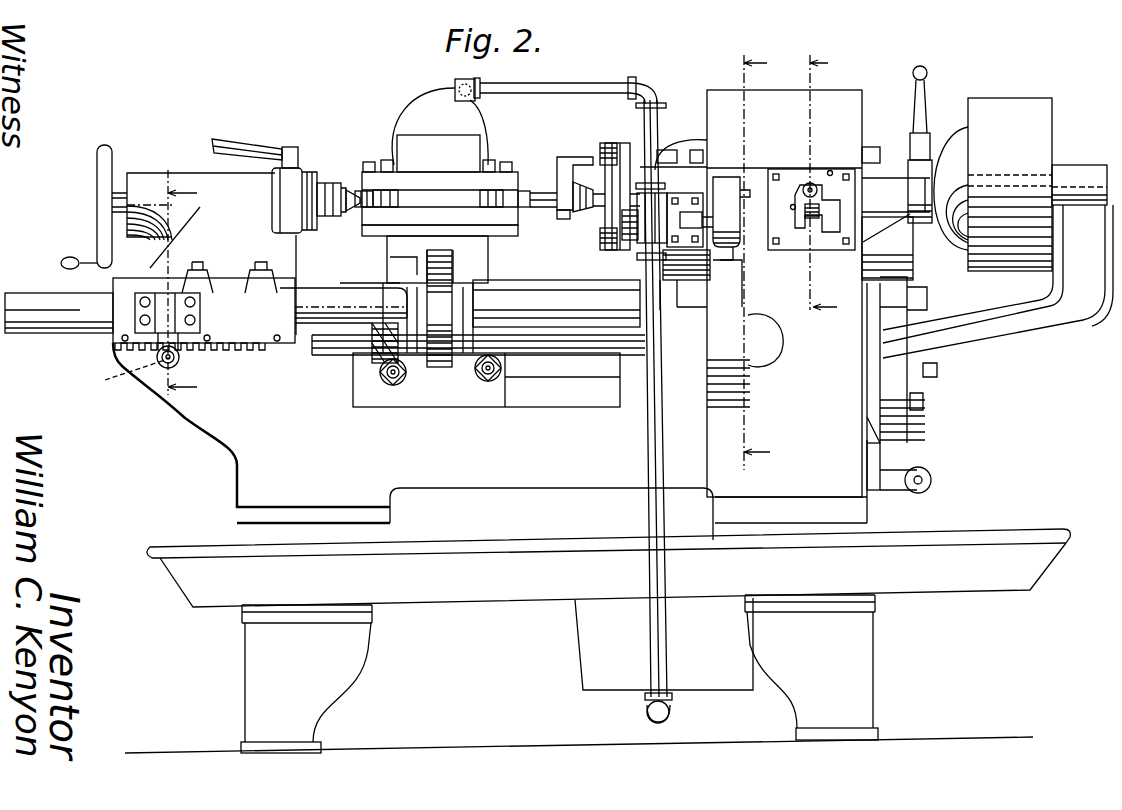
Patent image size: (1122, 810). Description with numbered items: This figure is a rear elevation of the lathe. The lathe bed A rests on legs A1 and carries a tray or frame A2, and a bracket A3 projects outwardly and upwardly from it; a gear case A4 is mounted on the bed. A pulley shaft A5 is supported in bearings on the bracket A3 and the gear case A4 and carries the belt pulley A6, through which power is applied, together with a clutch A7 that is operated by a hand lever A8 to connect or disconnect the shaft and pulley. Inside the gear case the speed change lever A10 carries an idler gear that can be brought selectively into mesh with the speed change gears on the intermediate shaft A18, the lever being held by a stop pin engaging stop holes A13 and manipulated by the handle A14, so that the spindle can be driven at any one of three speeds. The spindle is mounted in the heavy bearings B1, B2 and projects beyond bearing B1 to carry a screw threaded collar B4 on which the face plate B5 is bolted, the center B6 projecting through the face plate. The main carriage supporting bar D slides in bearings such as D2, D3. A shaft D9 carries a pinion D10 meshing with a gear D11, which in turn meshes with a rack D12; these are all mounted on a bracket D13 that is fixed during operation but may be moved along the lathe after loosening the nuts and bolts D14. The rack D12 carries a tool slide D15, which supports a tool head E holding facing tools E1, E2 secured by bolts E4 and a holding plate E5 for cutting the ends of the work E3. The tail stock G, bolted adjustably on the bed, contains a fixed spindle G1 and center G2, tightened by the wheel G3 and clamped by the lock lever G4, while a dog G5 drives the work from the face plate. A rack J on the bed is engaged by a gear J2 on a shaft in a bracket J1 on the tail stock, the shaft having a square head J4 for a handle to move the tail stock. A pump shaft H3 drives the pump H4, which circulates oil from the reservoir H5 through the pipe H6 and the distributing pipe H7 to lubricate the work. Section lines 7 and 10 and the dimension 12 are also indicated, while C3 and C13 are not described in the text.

The lathe bed A is at (200, 407).
The legs A1 is at (337, 673).
The tray or frame A2 is at (197, 547).
The bracket A3 is at (1073, 320).
The gear case A4 is at (777, 97).
The pulley shaft A5 is at (1113, 187).
The belt pulley A6 is at (1010, 107).
The clutch A7 is at (955, 140).
The hand lever A8 is at (917, 87).
The speed change lever A10 is at (803, 212).
The stop holes A13 is at (793, 205).
The handle A14 is at (810, 187).
The intermediate shaft A18 is at (915, 247).
The bearing B1 is at (683, 140).
The bearing B2 is at (893, 160).
The collar B4 is at (620, 142).
The face plate B5 is at (603, 140).
The center B6 is at (582, 205).
The bracket C3 is at (903, 297).
The roller C13 is at (932, 480).
The main carriage supporting bar D is at (72, 303).
The bearing D2 is at (633, 283).
The bearing D3 is at (113, 282).
The shaft D9 is at (330, 340).
The pinion D10 is at (446, 345).
The gear D11 is at (437, 285).
The rack D12 is at (463, 257).
The bracket D13 is at (487, 400).
The nuts and bolts D14 is at (393, 385).
The tool slide D15 is at (397, 238).
The tool head E is at (447, 213).
The facing tool E1 is at (390, 193).
The facing tool E2 is at (493, 193).
The work E3 is at (420, 140).
The bolts E4 is at (493, 165).
The holding plate E5 is at (367, 180).
The tail stock G is at (172, 180).
The fixed spindle G1 is at (328, 185).
The center G2 is at (347, 183).
The wheel G3 is at (103, 215).
The lock lever G4 is at (230, 137).
The dog G5 is at (573, 157).
The pump shaft H3 is at (655, 210).
The pump H4 is at (670, 192).
The reservoir H5 is at (597, 647).
The pipe H6 is at (653, 508).
The distributing pipe H7 is at (522, 88).
The rack J is at (240, 347).
The bracket J1 is at (170, 310).
The gear J2 is at (105, 380).
The square head J4 is at (163, 373).
The section line 7 is at (752, 262).
The section line 10 is at (818, 186).
The dimension 12 is at (195, 286).